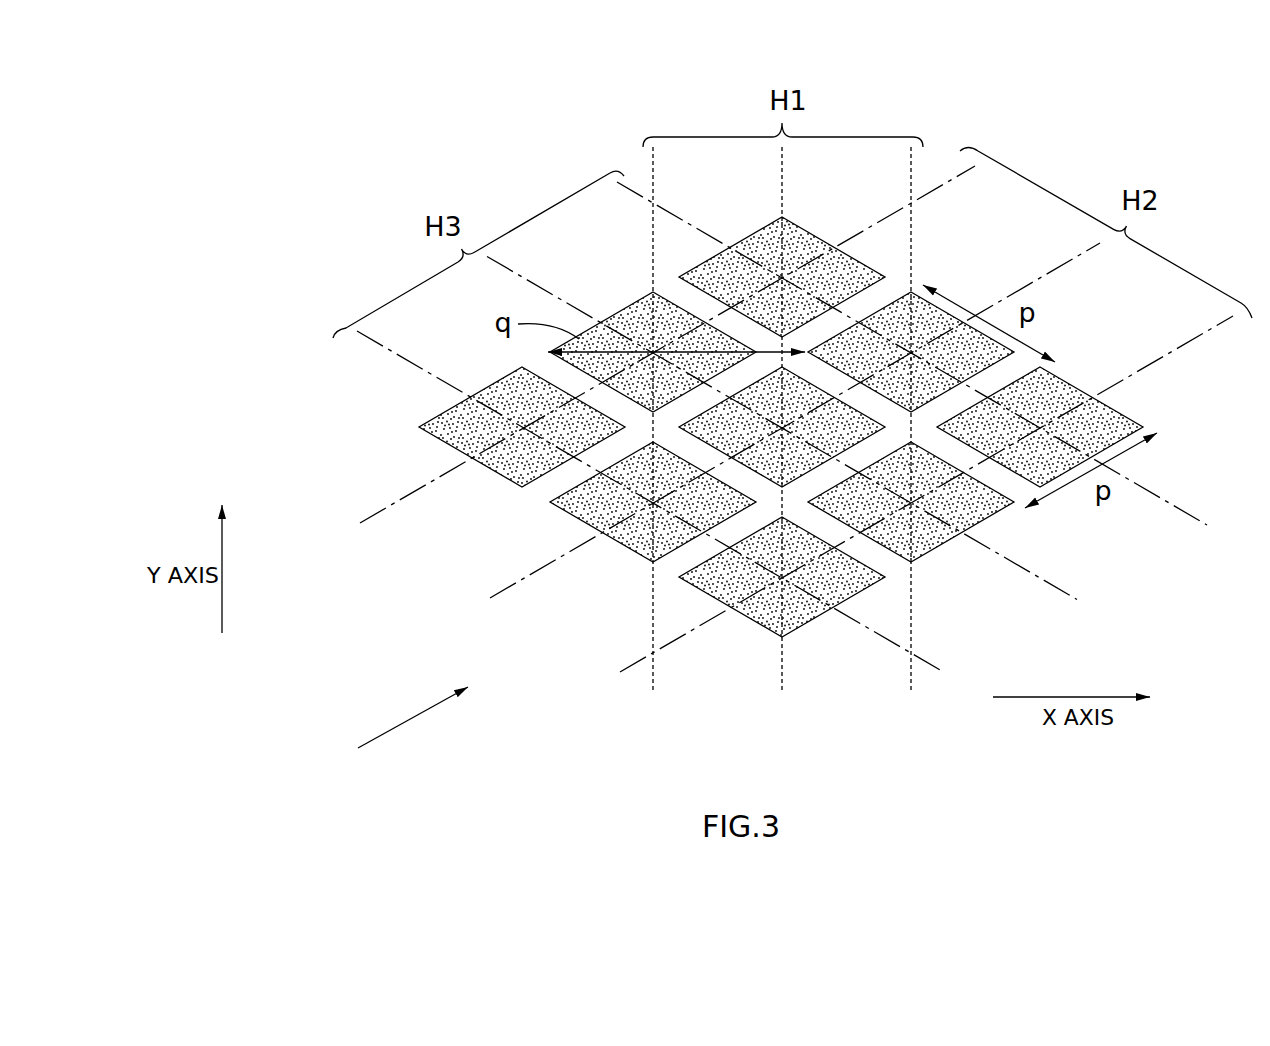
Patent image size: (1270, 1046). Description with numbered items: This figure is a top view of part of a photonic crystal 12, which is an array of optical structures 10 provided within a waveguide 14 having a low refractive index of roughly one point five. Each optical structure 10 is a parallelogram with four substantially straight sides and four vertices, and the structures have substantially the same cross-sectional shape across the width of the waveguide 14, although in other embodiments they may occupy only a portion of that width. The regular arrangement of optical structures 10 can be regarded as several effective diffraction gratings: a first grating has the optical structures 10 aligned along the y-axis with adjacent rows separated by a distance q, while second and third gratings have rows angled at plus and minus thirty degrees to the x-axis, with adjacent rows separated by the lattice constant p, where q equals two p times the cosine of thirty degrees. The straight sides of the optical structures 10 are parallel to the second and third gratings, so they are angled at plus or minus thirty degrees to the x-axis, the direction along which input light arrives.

The optical structure 10 is at (806, 243).
The photonic crystal 12 is at (422, 442).
The waveguide 14 is at (392, 735).